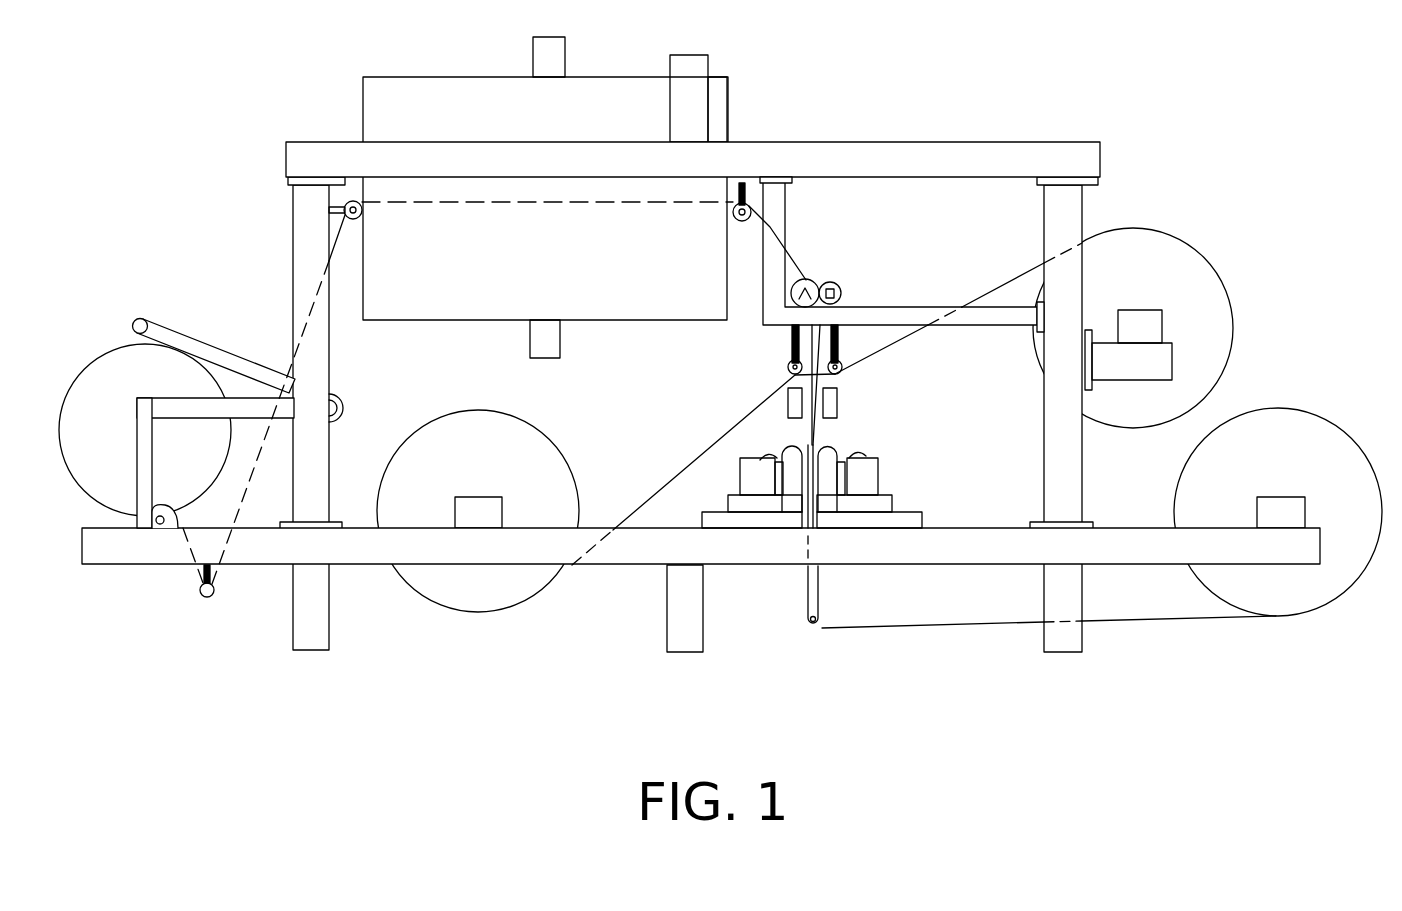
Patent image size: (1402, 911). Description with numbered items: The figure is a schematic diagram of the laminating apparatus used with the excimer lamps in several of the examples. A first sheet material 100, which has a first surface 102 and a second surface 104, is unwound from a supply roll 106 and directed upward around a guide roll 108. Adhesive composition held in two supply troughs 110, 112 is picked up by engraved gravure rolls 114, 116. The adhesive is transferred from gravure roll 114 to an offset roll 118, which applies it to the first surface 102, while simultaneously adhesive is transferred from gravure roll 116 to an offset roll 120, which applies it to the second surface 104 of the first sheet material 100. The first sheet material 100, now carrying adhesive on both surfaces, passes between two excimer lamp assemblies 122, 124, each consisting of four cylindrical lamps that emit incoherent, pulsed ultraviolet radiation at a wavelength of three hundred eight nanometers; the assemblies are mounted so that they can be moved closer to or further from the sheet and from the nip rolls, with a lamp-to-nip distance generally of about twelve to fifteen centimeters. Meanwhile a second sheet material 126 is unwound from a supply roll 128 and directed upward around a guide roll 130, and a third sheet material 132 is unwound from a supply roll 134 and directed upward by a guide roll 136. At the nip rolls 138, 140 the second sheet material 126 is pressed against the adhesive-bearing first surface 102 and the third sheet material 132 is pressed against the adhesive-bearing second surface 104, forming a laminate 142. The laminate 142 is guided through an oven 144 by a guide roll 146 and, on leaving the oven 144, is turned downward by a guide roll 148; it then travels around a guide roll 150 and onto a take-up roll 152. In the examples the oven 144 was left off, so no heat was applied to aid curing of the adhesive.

The first sheet material 100 is at (1177, 650).
The first surface 102 is at (1098, 618).
The second surface 104 is at (1127, 622).
The supply roll 106 is at (1307, 593).
The guide roll 108 is at (822, 614).
The supply trough 110 is at (868, 478).
The supply trough 112 is at (750, 473).
The engraved gravure roll 114 is at (858, 456).
The engraved gravure roll 116 is at (762, 453).
The offset roll 118 is at (835, 453).
The offset roll 120 is at (790, 446).
The excimer lamp assembly 122 is at (837, 393).
The excimer lamp assembly 124 is at (788, 398).
The second sheet material 126 is at (1012, 280).
The supply roll 128 is at (1203, 293).
The guide roll 130 is at (843, 372).
The third sheet material 132 is at (637, 507).
The supply roll 134 is at (442, 585).
The guide roll 136 is at (788, 363).
The nip roll 138 is at (840, 288).
The nip roll 140 is at (808, 282).
The laminate 142 is at (783, 250).
The oven 144 is at (498, 300).
The guide roll 146 is at (732, 212).
The guide roll 148 is at (365, 211).
The guide roll 150 is at (205, 598).
The take-up roll 152 is at (110, 357).